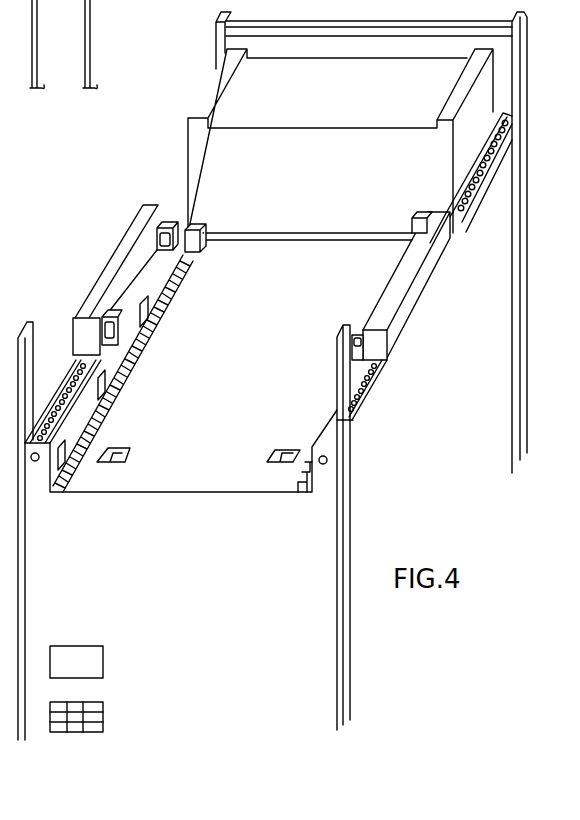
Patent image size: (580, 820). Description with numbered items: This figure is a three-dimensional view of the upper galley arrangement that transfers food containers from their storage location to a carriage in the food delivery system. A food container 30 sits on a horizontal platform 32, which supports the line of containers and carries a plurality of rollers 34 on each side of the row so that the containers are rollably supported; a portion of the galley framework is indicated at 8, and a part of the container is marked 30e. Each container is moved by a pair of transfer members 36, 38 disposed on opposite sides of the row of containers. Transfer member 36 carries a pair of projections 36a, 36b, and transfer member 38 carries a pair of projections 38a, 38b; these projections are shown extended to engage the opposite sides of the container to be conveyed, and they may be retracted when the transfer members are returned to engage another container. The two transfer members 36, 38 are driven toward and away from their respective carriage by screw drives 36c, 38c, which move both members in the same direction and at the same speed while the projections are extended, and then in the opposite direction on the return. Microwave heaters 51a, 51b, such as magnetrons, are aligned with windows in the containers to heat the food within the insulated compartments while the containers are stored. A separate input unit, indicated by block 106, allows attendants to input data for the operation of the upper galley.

The frame 8 is at (69, 50).
The cassette portion 30e is at (12, 10).
The food container 30 is at (250, 82).
The horizontal platform 32 is at (178, 468).
The rollers 34 is at (128, 362).
The transfer member 36 is at (124, 264).
The projection 36a is at (102, 318).
The projection 36b is at (192, 226).
The screw drive 36c is at (65, 397).
The transfer member 38 is at (428, 270).
The projection 38a is at (363, 328).
The projection 38b is at (419, 213).
The screw drive 38c is at (366, 384).
The microwave heater 51a is at (114, 455).
The microwave heater 51b is at (273, 457).
The input unit 106 is at (108, 718).